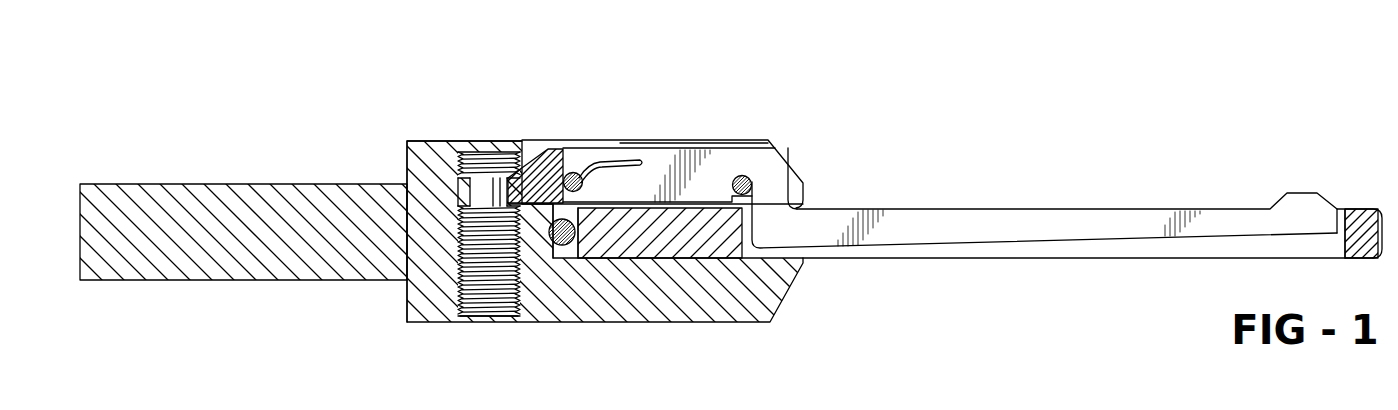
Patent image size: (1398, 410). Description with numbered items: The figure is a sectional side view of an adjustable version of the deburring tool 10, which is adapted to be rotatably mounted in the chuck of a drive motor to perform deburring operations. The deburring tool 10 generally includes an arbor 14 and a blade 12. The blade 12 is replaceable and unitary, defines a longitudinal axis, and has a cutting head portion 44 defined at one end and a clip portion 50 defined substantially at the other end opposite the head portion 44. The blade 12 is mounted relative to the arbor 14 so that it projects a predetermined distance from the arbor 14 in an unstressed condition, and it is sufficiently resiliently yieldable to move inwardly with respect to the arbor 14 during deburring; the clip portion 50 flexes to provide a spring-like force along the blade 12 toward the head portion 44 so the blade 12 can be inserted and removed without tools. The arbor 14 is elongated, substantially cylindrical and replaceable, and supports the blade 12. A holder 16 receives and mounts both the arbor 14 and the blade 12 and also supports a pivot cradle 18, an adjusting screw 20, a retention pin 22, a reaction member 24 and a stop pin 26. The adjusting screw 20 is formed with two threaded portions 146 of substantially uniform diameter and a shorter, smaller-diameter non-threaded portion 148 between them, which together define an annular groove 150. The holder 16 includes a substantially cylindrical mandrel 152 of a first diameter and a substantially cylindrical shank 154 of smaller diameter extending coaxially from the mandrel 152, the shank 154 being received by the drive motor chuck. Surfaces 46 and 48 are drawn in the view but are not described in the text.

The deburring tool 10 is at (135, 138).
The blade 12 is at (1102, 203).
The arbor 14 is at (1058, 268).
The holder 16 is at (673, 133).
The pivot cradle 18 is at (542, 143).
The adjusting screw 20 is at (497, 313).
The retention pin 22 is at (752, 180).
The reaction member 24 is at (573, 171).
The stop pin 26 is at (562, 245).
The cutting head portion 44 is at (1322, 191).
The arm surface 46 is at (958, 208).
The housing surface 48 is at (737, 143).
The clip portion 50 is at (617, 142).
The threaded portions 146 is at (460, 160).
The non-threaded portion 148 is at (470, 190).
The annular groove 150 is at (455, 197).
The mandrel 152 is at (422, 140).
The shank 154 is at (196, 182).